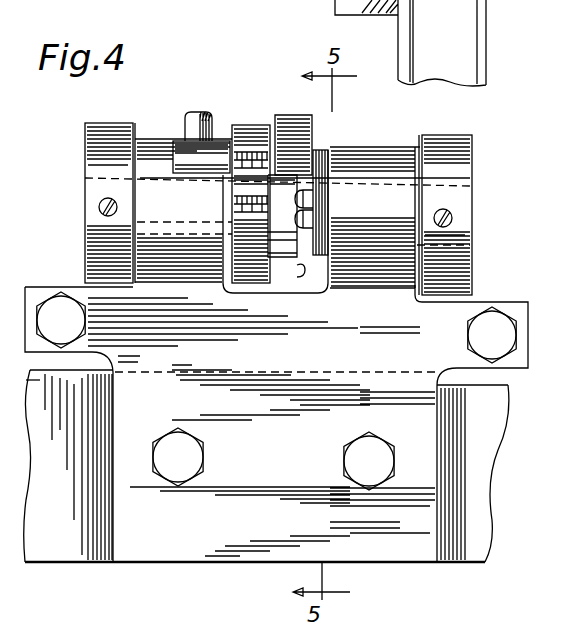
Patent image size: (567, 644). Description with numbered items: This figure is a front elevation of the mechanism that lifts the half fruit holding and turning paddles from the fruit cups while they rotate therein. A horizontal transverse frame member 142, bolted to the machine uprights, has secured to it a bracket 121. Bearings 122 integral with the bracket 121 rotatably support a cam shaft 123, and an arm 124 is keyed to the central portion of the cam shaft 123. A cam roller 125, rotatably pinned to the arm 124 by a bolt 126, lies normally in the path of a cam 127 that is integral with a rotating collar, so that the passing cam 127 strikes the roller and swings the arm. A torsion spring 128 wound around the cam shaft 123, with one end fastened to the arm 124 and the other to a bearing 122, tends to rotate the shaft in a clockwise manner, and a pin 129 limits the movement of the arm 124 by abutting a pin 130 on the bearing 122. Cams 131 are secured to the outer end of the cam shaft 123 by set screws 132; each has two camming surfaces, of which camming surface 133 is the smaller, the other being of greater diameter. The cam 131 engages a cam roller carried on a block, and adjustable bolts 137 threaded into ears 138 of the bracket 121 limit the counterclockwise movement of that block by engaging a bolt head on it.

The bracket 121 is at (150, 545).
The bearings 122 is at (382, 150).
The cam shaft 123 is at (467, 188).
The arm 124 is at (246, 125).
The cam roller 125 is at (312, 199).
The bolt 126 is at (312, 219).
The cam 127 is at (291, 122).
The torsion spring 128 is at (315, 172).
The pin 129 is at (175, 141).
The pin 130 is at (198, 112).
The cams 131 is at (474, 139).
The set screws 132 is at (452, 218).
The camming surface 133 is at (465, 240).
The adjustable bolts 137 is at (496, 318).
The ears 138 is at (528, 330).
The horizontal transverse frame member 142 is at (92, 545).